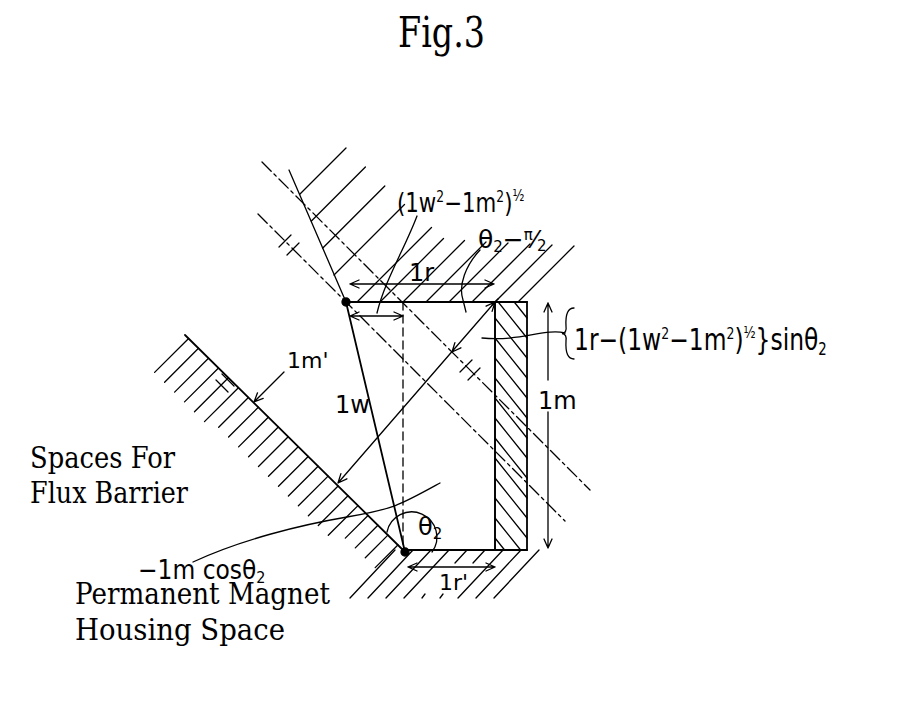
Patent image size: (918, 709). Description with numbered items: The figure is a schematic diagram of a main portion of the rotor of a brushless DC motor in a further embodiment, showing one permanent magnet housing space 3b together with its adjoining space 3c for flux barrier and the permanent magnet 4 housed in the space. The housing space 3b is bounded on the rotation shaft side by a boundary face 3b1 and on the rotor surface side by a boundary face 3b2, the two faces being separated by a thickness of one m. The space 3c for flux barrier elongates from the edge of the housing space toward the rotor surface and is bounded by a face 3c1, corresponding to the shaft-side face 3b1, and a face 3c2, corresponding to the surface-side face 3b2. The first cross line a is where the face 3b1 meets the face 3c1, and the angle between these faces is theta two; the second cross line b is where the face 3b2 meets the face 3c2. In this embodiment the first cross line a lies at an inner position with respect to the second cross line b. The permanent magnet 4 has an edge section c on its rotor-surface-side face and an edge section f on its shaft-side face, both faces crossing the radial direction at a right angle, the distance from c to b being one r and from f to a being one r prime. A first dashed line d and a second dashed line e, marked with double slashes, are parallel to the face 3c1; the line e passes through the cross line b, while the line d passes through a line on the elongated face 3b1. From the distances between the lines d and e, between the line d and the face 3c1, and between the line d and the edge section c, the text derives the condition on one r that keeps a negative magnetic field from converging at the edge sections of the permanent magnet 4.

The permanent magnet housing space 3b is at (345, 530).
The boundary face of the permanent magnet housing space in the rotation shaft side 3b1 is at (503, 556).
The boundary face of the permanent magnet housing space in the rotor surface side 3b2 is at (437, 303).
The space for flux barrier 3c is at (228, 343).
The boundary face of the space for flux barrier 3c1 is at (252, 452).
The boundary face of the space for flux barrier 3c2 is at (355, 215).
The permanent magnet 4 is at (526, 540).
The first cross line a is at (400, 557).
The second cross line b is at (340, 306).
The edge section of the permanent magnet c is at (496, 301).
The first dashed line d is at (277, 177).
The second dashed line e is at (278, 234).
The edge section of the permanent magnet f is at (496, 547).